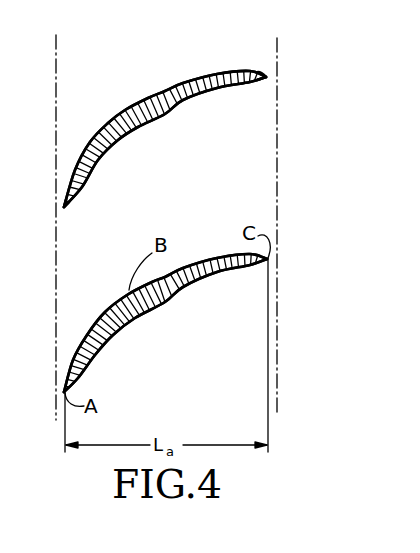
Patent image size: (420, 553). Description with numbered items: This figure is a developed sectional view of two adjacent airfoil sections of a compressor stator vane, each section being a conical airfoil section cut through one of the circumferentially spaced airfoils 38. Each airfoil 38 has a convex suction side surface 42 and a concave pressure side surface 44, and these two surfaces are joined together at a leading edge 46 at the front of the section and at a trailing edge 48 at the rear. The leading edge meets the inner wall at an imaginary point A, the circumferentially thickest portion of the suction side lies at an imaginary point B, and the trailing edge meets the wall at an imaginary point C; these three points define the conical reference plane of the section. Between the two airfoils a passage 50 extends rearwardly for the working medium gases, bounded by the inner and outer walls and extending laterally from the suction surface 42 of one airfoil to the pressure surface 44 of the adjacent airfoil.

The airfoil 38 is at (173, 84).
The suction side surface 42 is at (149, 96).
The pressure side surface 44 is at (151, 121).
The leading edge 46 is at (64, 209).
The trailing edge 48 is at (267, 77).
The passage 50 is at (191, 184).